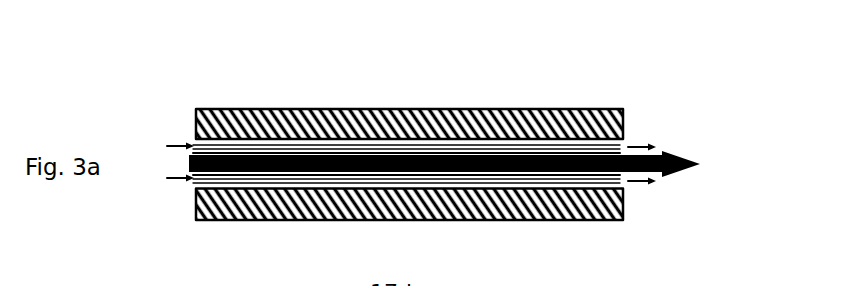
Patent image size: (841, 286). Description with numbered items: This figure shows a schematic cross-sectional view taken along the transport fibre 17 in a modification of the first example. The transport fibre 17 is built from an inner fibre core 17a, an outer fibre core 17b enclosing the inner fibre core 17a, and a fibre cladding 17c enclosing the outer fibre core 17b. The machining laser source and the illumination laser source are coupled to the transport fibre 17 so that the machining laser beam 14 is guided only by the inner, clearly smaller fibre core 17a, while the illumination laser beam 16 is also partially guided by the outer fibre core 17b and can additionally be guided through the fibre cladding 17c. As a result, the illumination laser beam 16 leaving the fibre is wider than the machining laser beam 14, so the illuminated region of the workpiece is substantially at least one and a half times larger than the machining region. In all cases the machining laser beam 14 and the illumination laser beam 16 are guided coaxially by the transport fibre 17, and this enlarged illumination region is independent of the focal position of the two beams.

The transport fibre 17 is at (382, 142).
The inner fibre core 17a is at (342, 170).
The outer fibre core 17b is at (547, 185).
The fibre cladding 17c is at (537, 110).
The illumination laser beam 16 is at (649, 145).
The machining laser beam 14 is at (678, 173).